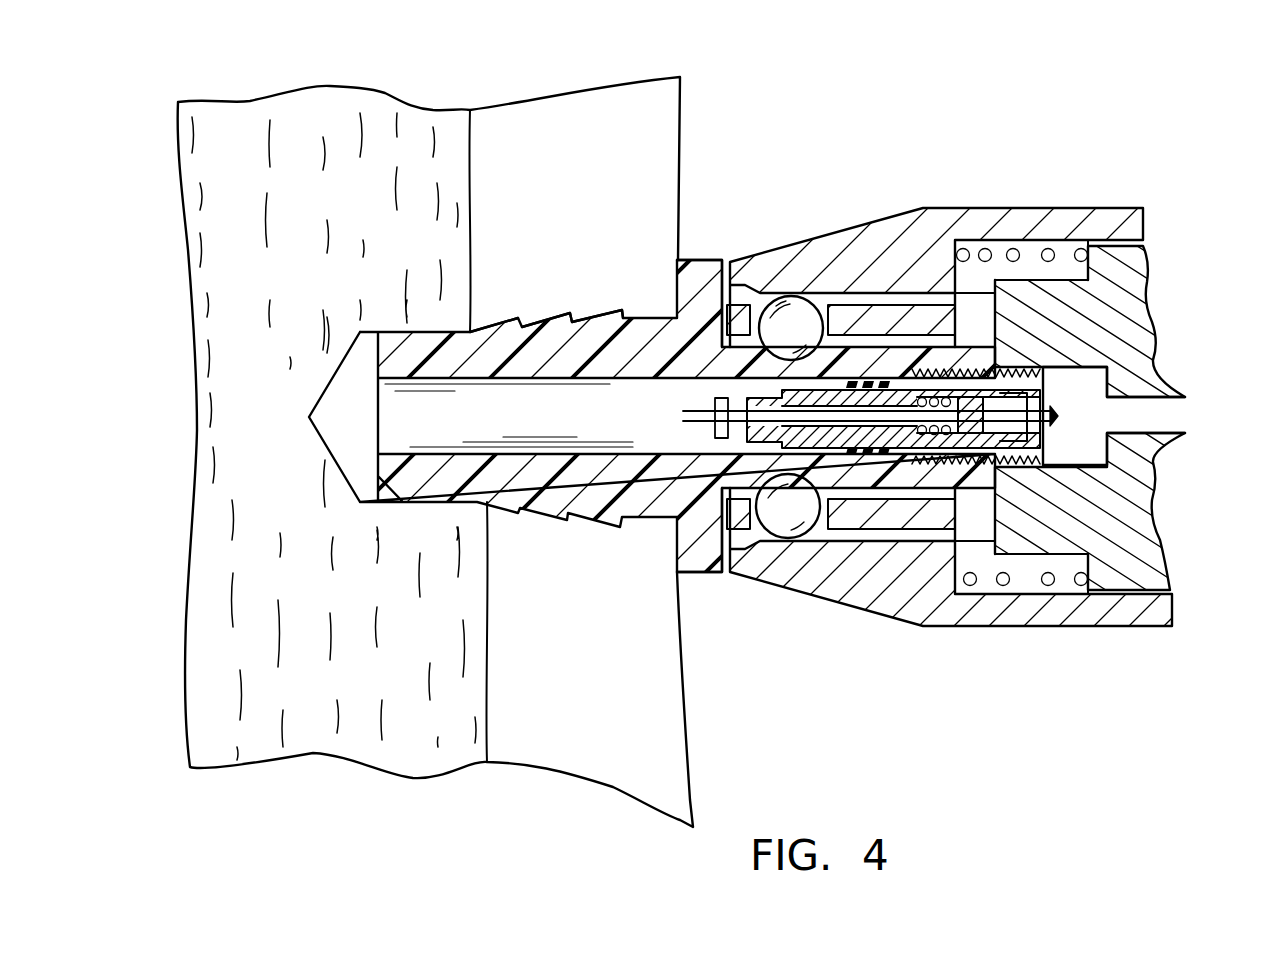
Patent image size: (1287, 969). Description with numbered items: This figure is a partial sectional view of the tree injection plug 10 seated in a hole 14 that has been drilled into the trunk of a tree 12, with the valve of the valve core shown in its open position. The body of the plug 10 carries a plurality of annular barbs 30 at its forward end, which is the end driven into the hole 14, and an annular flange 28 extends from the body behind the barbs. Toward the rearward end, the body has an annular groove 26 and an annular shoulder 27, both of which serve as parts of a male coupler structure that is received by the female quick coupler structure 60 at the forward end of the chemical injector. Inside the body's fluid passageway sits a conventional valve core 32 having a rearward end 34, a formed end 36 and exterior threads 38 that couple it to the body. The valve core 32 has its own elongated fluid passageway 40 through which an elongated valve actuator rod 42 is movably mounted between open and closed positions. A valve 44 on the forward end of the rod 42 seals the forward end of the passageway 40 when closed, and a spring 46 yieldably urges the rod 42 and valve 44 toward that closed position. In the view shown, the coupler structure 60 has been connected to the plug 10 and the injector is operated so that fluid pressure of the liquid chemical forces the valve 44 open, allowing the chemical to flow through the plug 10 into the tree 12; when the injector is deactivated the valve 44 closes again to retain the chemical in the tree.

The tree injection plug 10 is at (702, 250).
The tree 12 is at (457, 98).
The hole 14 is at (505, 330).
The annular groove 26 is at (807, 399).
The annular shoulder 27 is at (992, 355).
The annular flange 28 is at (705, 278).
The annular barbs 30 is at (620, 318).
The valve core 32 is at (1049, 364).
The rearward end 34 is at (1043, 448).
The formed end 36 is at (747, 442).
The exterior threads 38 is at (1040, 482).
The fluid passageway 40 is at (807, 437).
The valve actuator rod 42 is at (912, 386).
The valve 44 is at (715, 404).
The spring 46 is at (975, 455).
The female quick coupler structure 60 is at (874, 228).